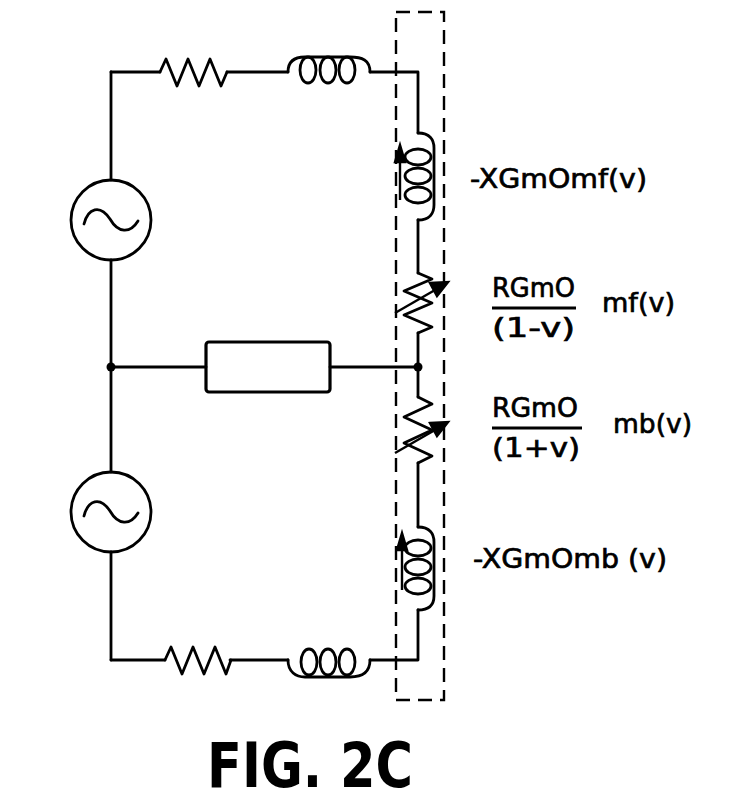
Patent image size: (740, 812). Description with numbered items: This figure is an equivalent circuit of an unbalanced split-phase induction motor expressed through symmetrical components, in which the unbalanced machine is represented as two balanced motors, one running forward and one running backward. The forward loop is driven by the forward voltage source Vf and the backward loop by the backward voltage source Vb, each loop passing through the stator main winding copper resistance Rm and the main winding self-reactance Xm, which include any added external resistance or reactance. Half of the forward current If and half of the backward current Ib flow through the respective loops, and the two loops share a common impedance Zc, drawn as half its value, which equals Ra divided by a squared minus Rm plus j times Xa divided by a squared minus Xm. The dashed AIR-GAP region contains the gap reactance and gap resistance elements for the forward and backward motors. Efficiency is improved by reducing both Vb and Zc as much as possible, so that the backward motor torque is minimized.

The stator main winding resistance Rm is at (195, 364).
The main stator winding self-reactance Xm is at (329, 364).
The forward voltage source Vf is at (84, 220).
The backward voltage source Vb is at (84, 512).
The common impedance Zc is at (268, 367).
The forward current If is at (352, 128).
The backward current Ib is at (352, 427).
The air gap AIR-GAP is at (460, 33).